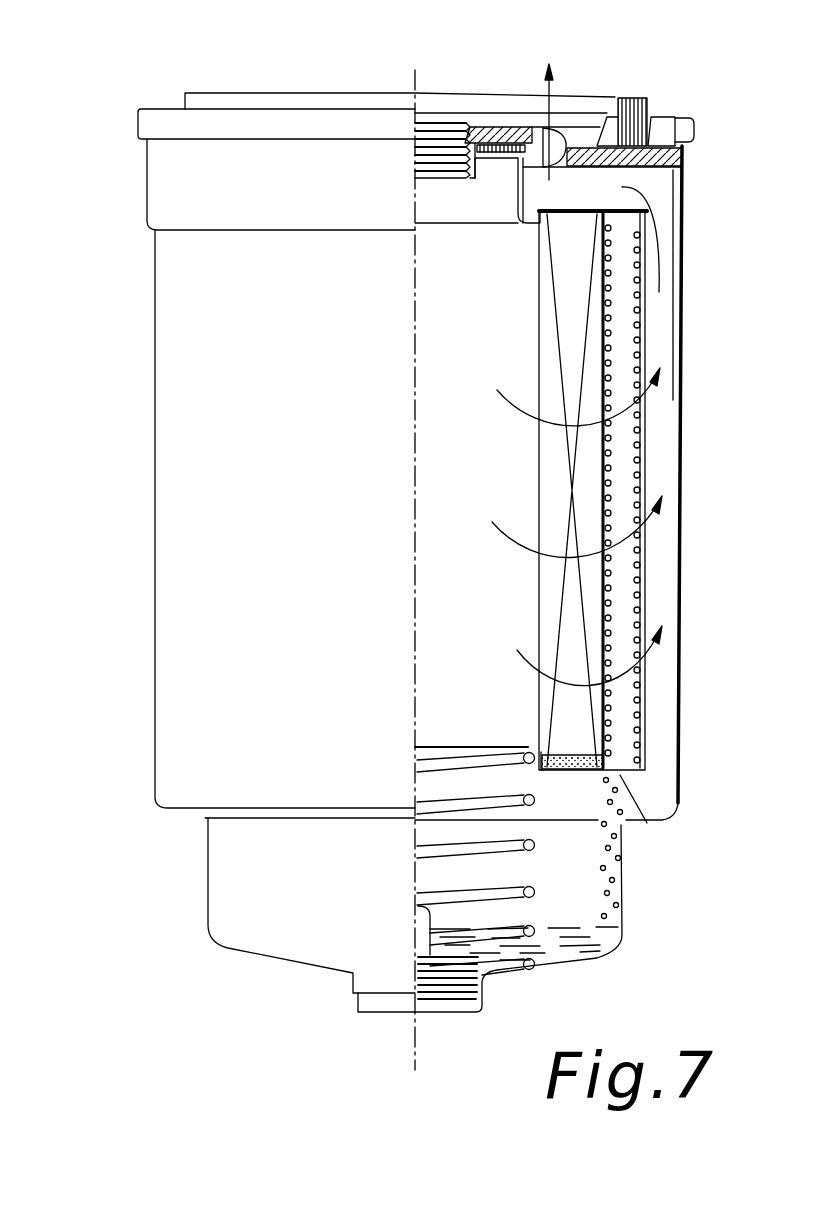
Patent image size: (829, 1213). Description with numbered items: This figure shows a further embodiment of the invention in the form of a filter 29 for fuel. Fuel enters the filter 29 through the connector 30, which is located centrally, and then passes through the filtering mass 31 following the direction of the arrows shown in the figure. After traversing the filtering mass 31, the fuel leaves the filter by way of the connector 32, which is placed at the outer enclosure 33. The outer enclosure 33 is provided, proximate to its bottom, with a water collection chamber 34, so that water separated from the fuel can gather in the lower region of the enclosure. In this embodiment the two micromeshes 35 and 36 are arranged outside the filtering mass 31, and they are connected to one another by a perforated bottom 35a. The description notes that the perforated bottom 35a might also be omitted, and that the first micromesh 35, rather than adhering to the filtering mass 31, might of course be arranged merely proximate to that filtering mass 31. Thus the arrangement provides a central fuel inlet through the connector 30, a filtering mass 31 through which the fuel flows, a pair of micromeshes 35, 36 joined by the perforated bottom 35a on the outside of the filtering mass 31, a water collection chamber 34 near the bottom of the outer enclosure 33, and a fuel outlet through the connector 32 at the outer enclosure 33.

The filter 29 is at (152, 447).
The connector 30 is at (455, 252).
The filtering mass 31 is at (560, 305).
The connector 32 is at (553, 128).
The outer enclosure 33 is at (680, 278).
The water collection chamber 34 is at (576, 881).
The micromesh 35 is at (607, 572).
The perforated bottom 35a is at (648, 821).
The micromesh 36 is at (645, 458).